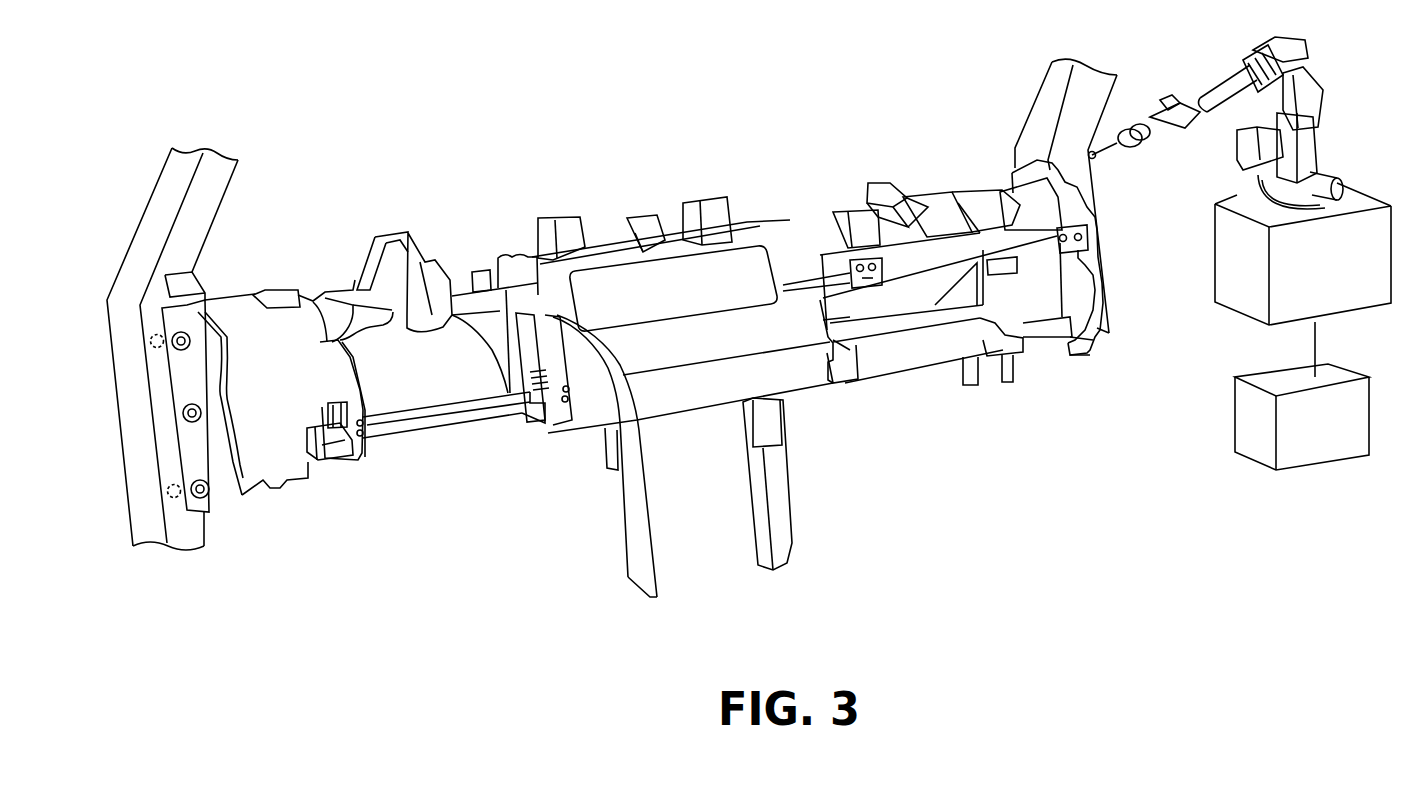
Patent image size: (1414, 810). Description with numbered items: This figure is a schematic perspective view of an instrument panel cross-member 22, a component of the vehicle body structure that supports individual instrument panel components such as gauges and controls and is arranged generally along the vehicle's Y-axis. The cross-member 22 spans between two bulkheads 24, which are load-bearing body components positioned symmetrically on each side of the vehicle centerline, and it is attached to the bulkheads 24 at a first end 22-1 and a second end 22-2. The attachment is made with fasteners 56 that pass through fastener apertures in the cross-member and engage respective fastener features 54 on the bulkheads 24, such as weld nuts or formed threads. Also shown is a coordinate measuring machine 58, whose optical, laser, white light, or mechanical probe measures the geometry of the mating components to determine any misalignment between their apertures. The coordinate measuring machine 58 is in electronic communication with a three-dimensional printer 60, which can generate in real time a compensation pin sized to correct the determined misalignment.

The instrument panel cross-member 22 is at (689, 387).
The first end 22-1 is at (219, 530).
The second end 22-2 is at (1083, 361).
The bulkhead 24 is at (110, 331).
The fastener feature 54 is at (153, 342).
The fastener 56 is at (220, 498).
The coordinate measuring machine 58 is at (1236, 273).
The 3D printer 60 is at (1253, 420).